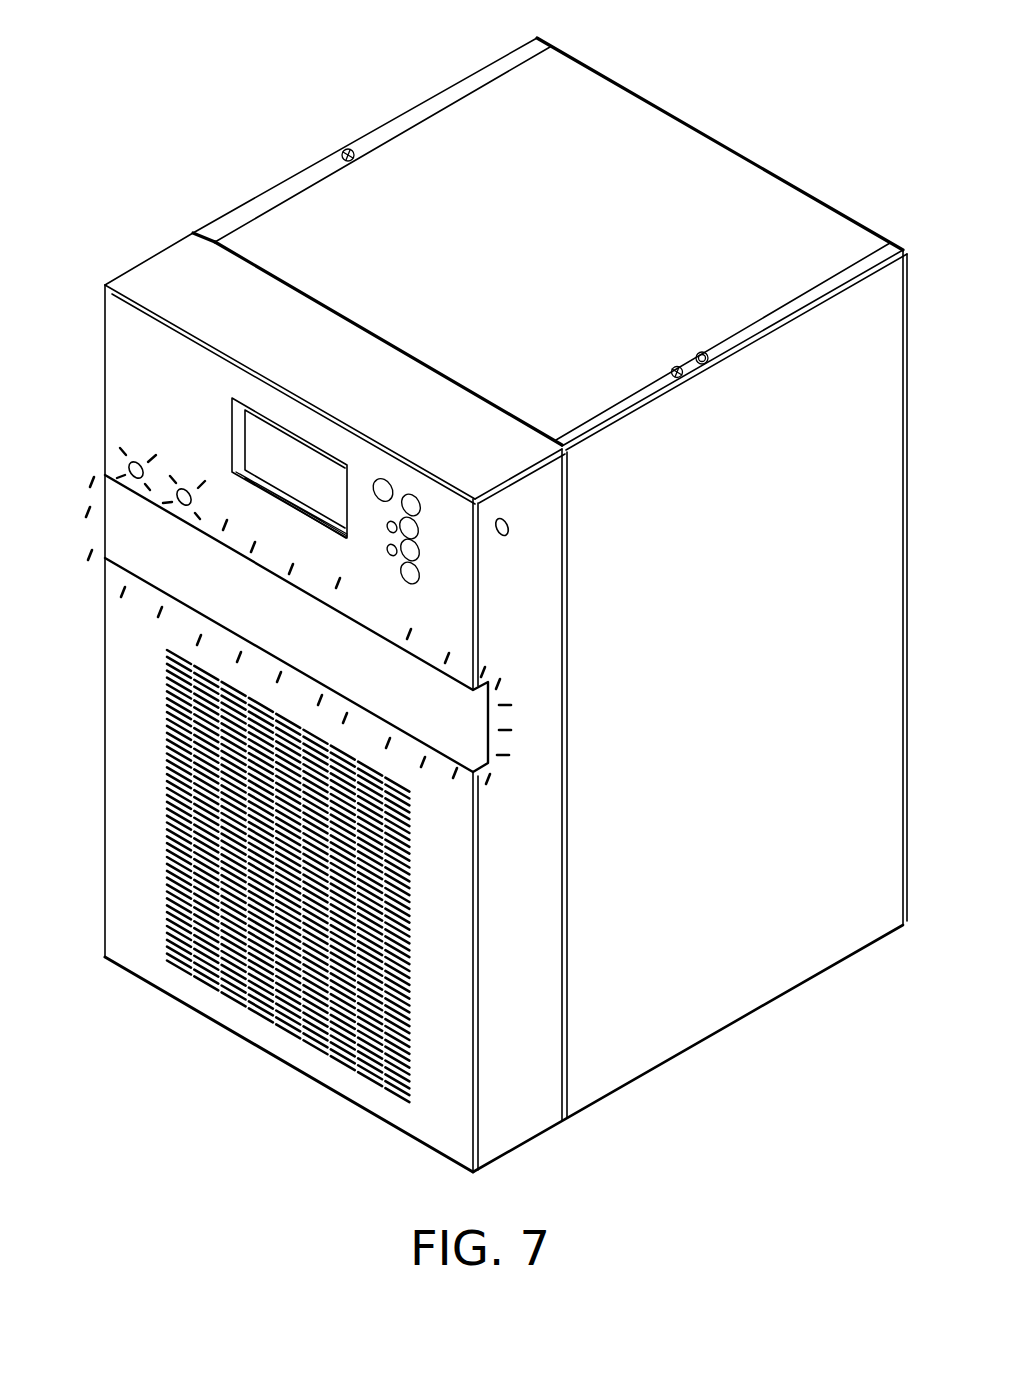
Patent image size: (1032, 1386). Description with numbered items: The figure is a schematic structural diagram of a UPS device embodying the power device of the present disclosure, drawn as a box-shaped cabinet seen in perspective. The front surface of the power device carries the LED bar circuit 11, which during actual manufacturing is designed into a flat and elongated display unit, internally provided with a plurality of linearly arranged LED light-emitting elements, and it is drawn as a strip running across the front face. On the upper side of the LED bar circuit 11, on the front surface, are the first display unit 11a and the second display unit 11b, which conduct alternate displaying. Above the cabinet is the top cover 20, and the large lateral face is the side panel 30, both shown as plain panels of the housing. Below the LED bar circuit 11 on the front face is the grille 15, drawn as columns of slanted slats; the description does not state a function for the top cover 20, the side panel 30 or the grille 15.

The top cover 20 is at (683, 160).
The side panel 30 is at (730, 977).
The LED bar circuit 11 is at (122, 528).
The first display unit 11a is at (136, 461).
The second display unit 11b is at (186, 487).
The air inlet grille 15 is at (290, 1036).